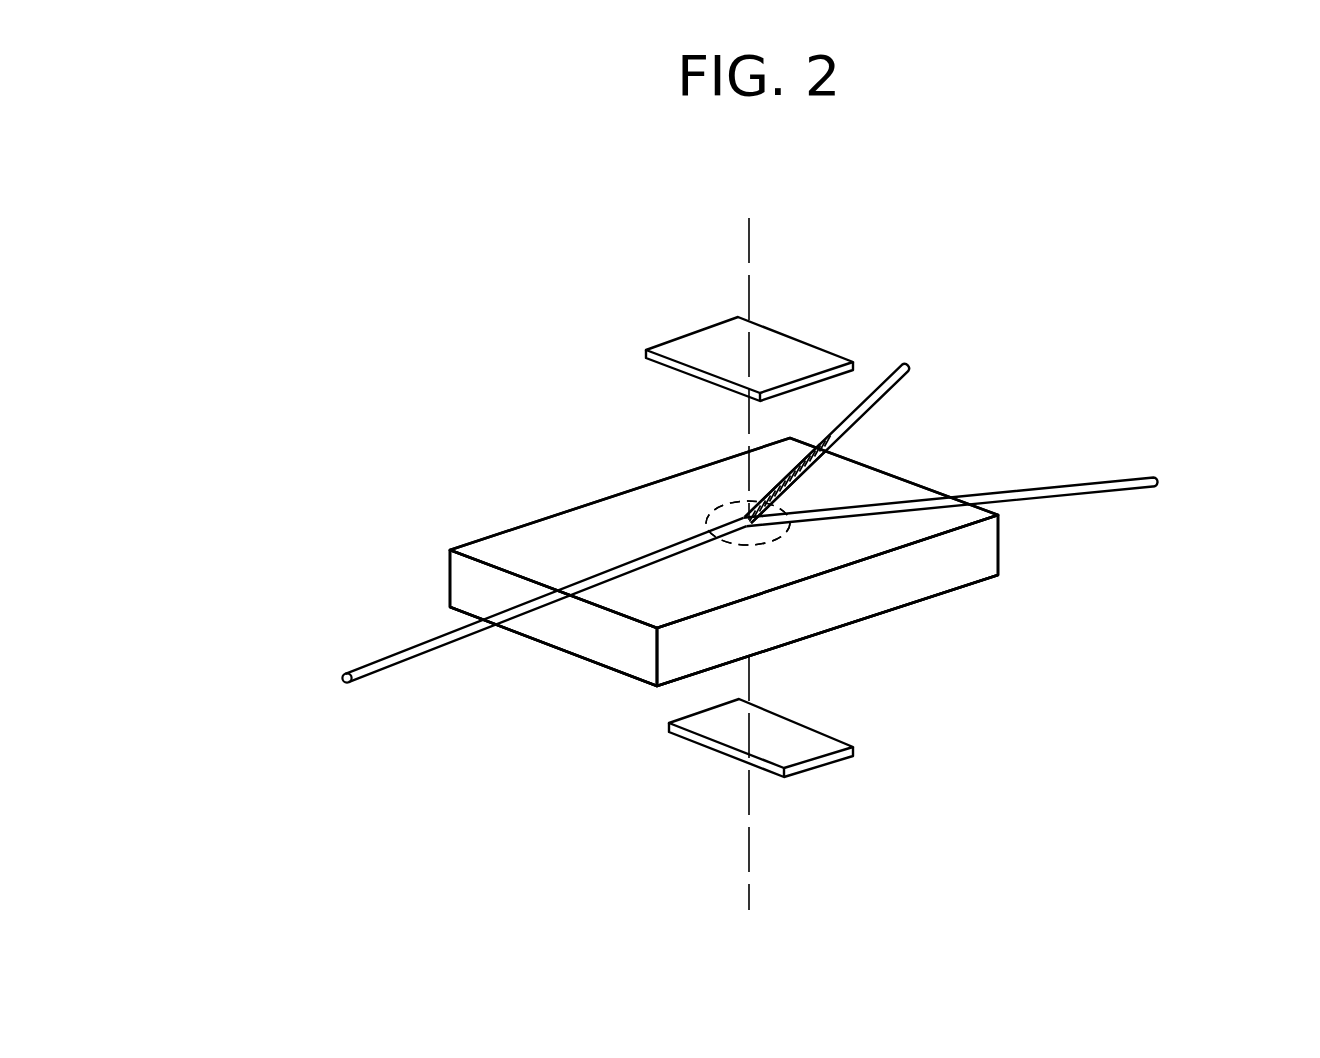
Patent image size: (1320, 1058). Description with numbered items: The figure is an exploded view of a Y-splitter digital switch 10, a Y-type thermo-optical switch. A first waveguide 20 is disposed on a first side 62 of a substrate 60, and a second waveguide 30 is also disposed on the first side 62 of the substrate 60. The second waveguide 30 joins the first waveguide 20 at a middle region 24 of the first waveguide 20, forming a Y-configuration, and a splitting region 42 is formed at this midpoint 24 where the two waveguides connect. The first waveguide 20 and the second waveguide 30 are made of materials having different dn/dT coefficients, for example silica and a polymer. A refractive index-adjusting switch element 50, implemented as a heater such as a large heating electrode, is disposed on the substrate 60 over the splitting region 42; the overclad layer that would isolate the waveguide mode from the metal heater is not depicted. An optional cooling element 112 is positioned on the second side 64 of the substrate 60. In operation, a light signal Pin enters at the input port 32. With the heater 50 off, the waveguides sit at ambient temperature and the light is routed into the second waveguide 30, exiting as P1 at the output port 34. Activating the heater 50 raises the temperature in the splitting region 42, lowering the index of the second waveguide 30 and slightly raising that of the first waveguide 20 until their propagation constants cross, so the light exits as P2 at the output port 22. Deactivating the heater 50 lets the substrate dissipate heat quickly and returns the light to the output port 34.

The Y-splitter digital switch 10 is at (1124, 555).
The first waveguide 20 is at (882, 503).
The output port 22 is at (1126, 472).
The middle region 24 is at (742, 521).
The second waveguide 30 is at (826, 475).
The input port 32 is at (413, 670).
The output port 34 is at (883, 361).
The splitting region 42 is at (782, 547).
The refractive index-adjusting switch element 50 is at (718, 354).
The substrate 60 is at (474, 584).
The first side 62 is at (515, 554).
The second side 64 is at (621, 678).
The cooling element 112 is at (790, 746).
The input optical power Pin is at (322, 689).
The reflected power P1 is at (923, 355).
The transmitted power P2 is at (1172, 478).